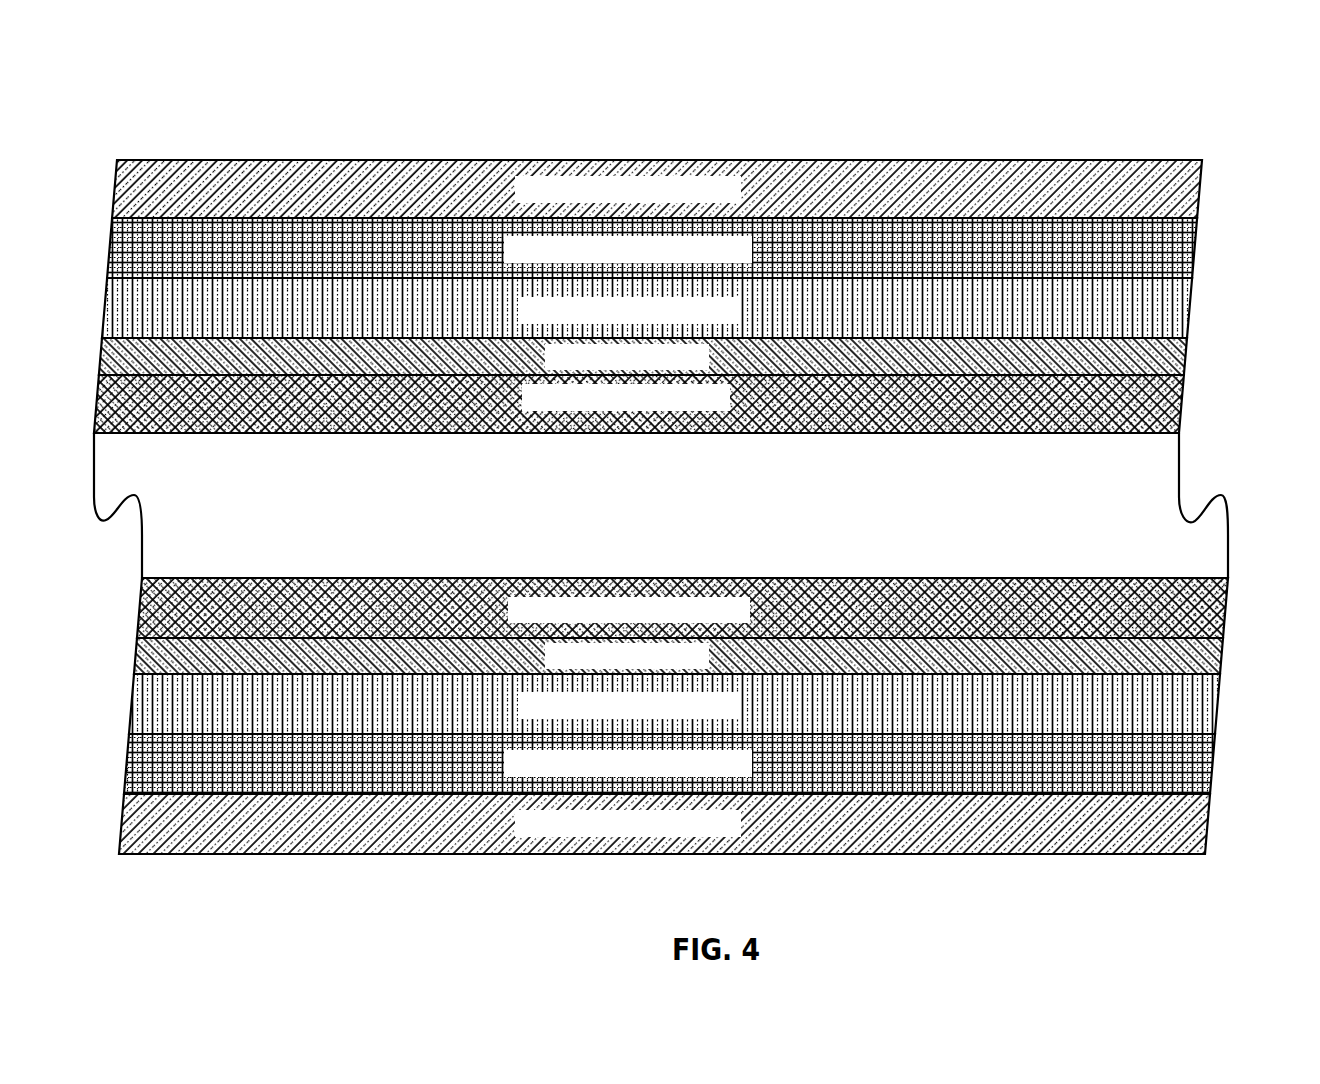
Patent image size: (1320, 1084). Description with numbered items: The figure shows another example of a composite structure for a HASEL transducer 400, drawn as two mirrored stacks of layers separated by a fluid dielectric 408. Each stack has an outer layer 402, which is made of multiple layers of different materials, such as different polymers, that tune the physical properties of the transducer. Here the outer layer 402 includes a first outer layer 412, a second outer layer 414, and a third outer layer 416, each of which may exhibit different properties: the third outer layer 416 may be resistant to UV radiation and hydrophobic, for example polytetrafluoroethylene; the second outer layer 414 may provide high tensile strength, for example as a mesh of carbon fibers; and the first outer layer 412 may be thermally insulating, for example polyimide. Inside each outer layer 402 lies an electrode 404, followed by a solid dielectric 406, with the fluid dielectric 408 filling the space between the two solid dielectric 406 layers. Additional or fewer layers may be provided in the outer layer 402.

The HASEL transducer 400 is at (1109, 133).
The outer layer 402 is at (1222, 160).
The electrode 404 is at (661, 506).
The solid dielectric 406 is at (661, 506).
The fluid dielectric 408 is at (661, 505).
The first outer layer 412 is at (726, 322).
The second outer layer 414 is at (743, 260).
The third outer layer 416 is at (730, 200).